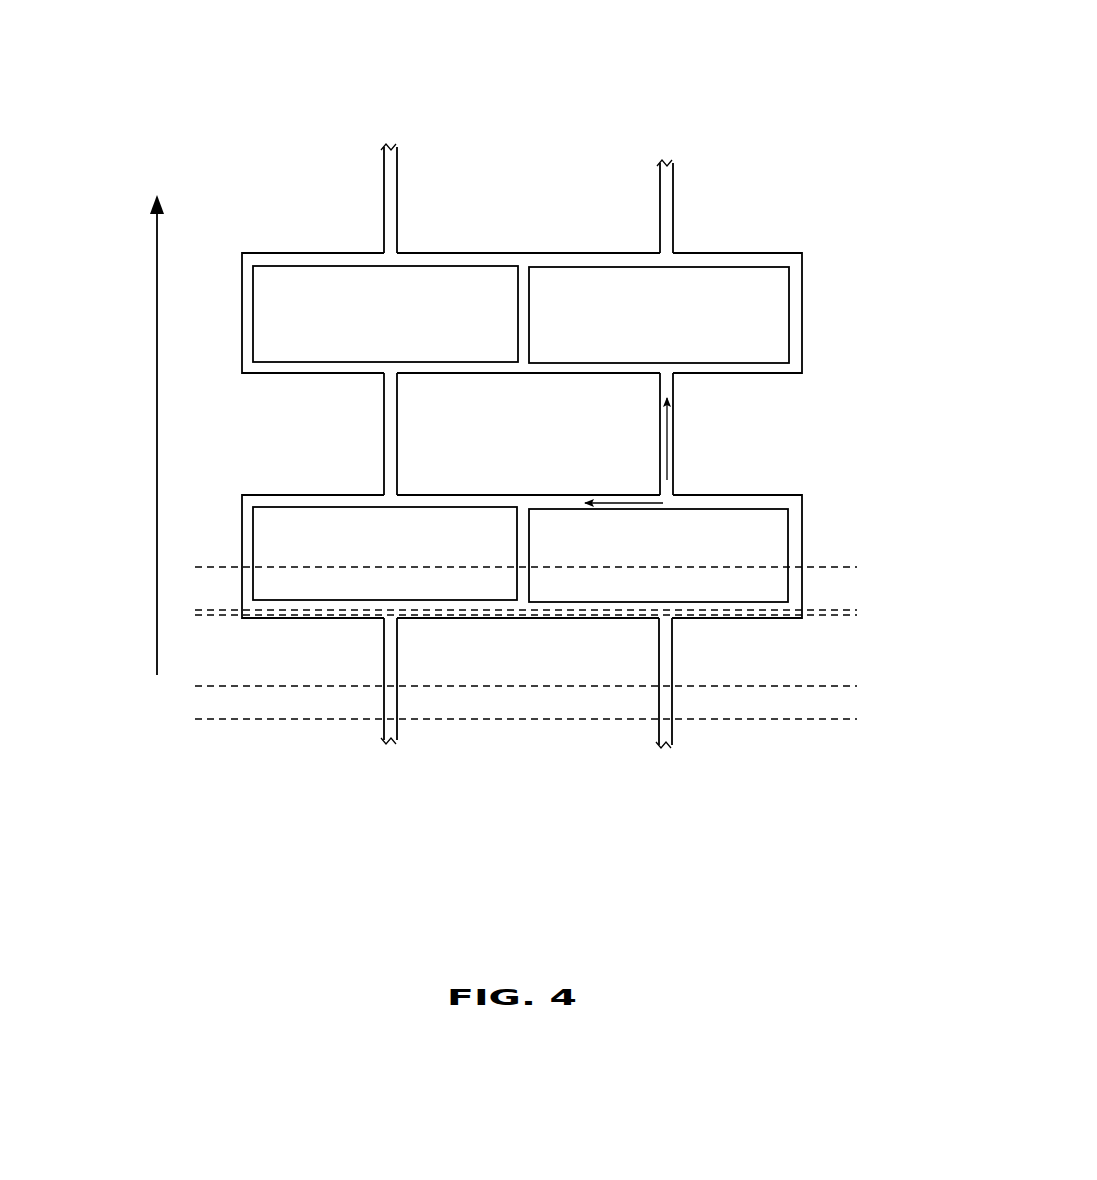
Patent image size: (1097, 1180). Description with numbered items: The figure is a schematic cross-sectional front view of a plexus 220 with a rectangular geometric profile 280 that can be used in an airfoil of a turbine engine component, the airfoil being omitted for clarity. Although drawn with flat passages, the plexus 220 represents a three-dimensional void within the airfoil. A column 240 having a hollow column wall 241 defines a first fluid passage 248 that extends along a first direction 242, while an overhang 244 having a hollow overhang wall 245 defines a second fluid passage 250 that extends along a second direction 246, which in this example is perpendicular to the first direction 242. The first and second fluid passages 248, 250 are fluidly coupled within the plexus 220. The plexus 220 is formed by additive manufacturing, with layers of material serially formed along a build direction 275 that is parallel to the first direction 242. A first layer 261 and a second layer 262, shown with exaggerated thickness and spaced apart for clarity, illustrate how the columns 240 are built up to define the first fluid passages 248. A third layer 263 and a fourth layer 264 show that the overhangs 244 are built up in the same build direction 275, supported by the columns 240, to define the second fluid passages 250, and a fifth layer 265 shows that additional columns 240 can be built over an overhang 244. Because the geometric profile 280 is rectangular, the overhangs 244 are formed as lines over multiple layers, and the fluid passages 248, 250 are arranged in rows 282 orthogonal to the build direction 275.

The plexus 220 is at (828, 120).
The column 240 is at (668, 222).
The column wall 241 is at (675, 183).
The first direction 242 is at (667, 460).
The overhang 244 is at (773, 263).
The overhang wall 245 is at (772, 253).
The second direction 246 is at (612, 503).
The first fluid passage 248 is at (660, 432).
The second fluid passage 250 is at (560, 500).
The first layer 261 is at (857, 719).
The second layer 262 is at (857, 686).
The third layer 263 is at (857, 615).
The fourth layer 264 is at (857, 610).
The fifth layer 265 is at (857, 567).
The build direction 275 is at (155, 270).
The geometric profile 280 is at (358, 303).
The rows 282 is at (578, 252).